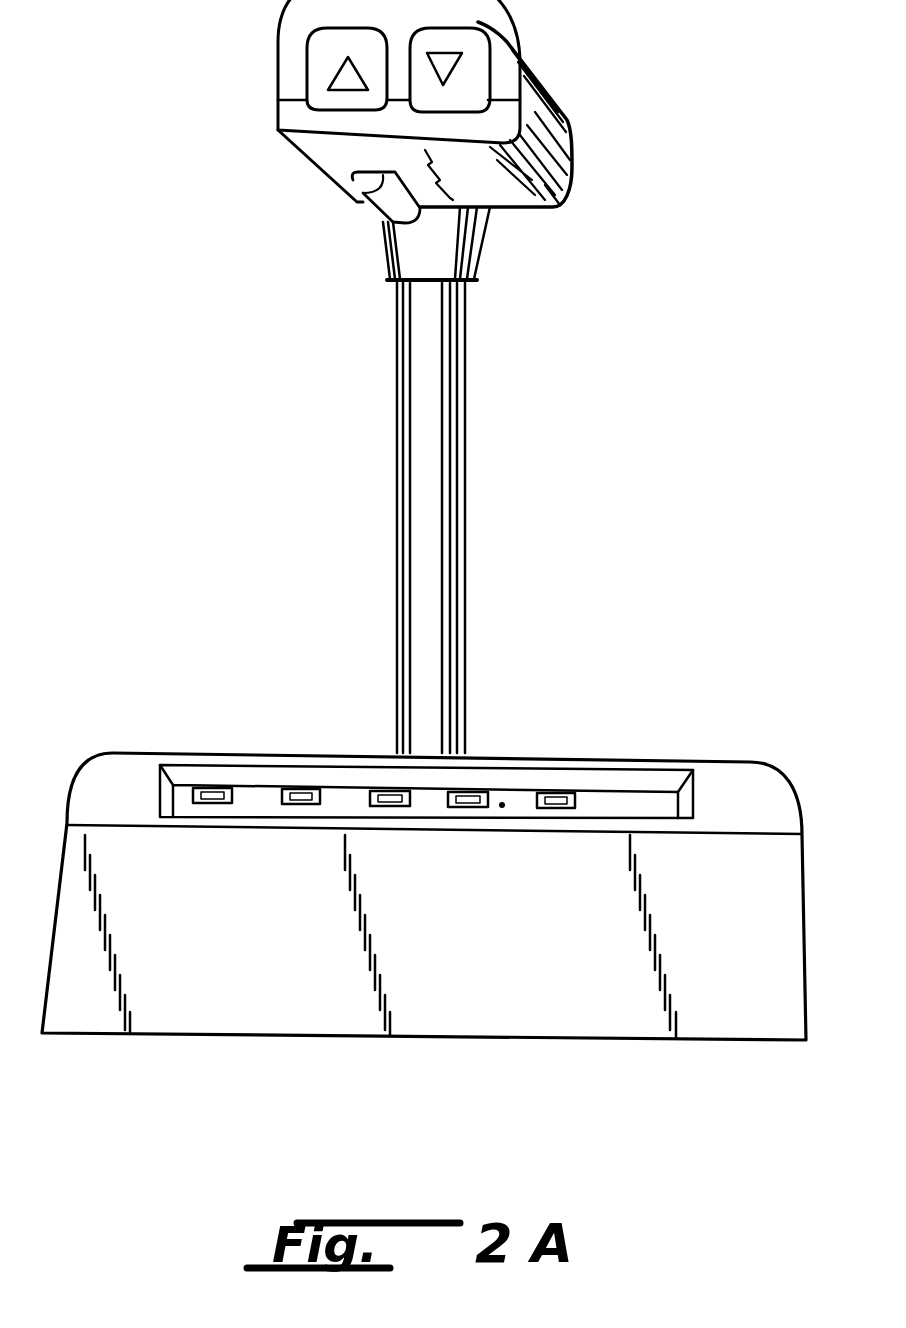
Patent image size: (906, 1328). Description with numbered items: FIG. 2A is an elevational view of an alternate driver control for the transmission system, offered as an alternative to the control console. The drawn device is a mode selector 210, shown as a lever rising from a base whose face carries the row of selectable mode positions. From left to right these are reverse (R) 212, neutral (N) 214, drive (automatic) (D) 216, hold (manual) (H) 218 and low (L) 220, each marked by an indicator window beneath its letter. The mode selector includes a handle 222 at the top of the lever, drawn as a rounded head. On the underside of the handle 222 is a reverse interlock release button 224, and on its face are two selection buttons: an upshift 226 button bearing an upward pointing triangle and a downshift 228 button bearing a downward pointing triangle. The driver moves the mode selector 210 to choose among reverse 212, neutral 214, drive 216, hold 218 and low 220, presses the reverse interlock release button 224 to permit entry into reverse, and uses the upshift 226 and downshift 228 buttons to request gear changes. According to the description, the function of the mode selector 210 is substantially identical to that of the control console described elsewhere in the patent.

The mode selector 210 is at (424, 520).
The reverse (R) position 212 is at (212, 803).
The neutral (N) position 214 is at (307, 804).
The drive (automatic) (D) position 216 is at (388, 807).
The hold (manual) (H) position 218 is at (470, 807).
The low (L) position 220 is at (556, 808).
The handle 222 is at (339, 143).
The reverse interlock release button 224 is at (405, 207).
The upshift selection button 226 is at (337, 43).
The downshift selection button 228 is at (457, 43).